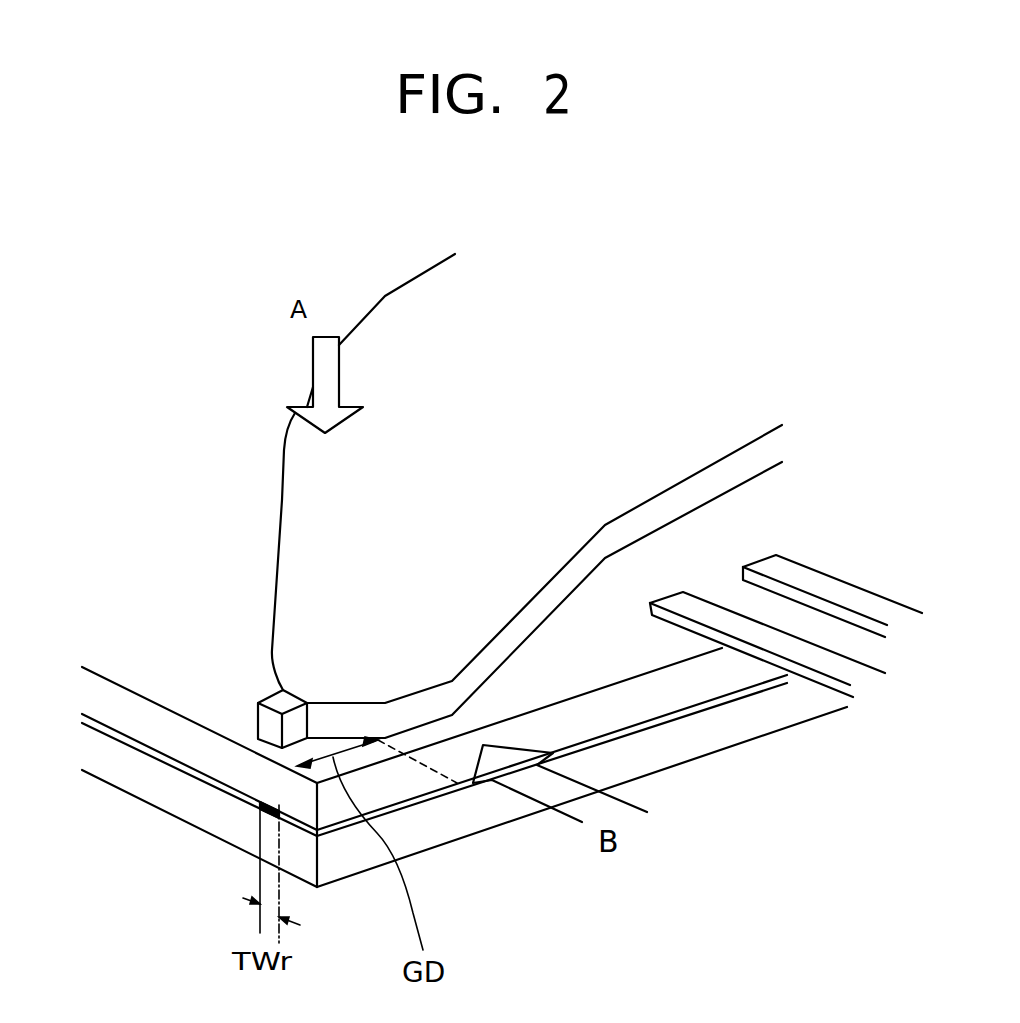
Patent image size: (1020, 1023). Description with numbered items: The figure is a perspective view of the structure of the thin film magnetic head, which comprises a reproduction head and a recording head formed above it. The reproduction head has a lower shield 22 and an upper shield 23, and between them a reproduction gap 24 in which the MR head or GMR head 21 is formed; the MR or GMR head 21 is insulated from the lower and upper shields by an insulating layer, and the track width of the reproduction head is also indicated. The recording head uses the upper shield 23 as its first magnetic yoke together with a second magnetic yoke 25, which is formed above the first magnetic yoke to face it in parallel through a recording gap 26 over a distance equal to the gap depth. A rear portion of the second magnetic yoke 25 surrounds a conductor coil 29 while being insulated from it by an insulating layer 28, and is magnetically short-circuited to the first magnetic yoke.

The MR head or GMR head 21 is at (262, 837).
The lower shield 22 is at (712, 742).
The upper shield 23 is at (397, 783).
The reproduction gap 24 is at (305, 840).
The second magnetic yoke 25 is at (583, 413).
The recording gap 26 is at (268, 752).
The insulating layer 28 is at (577, 627).
The conductor coil 29 is at (800, 573).